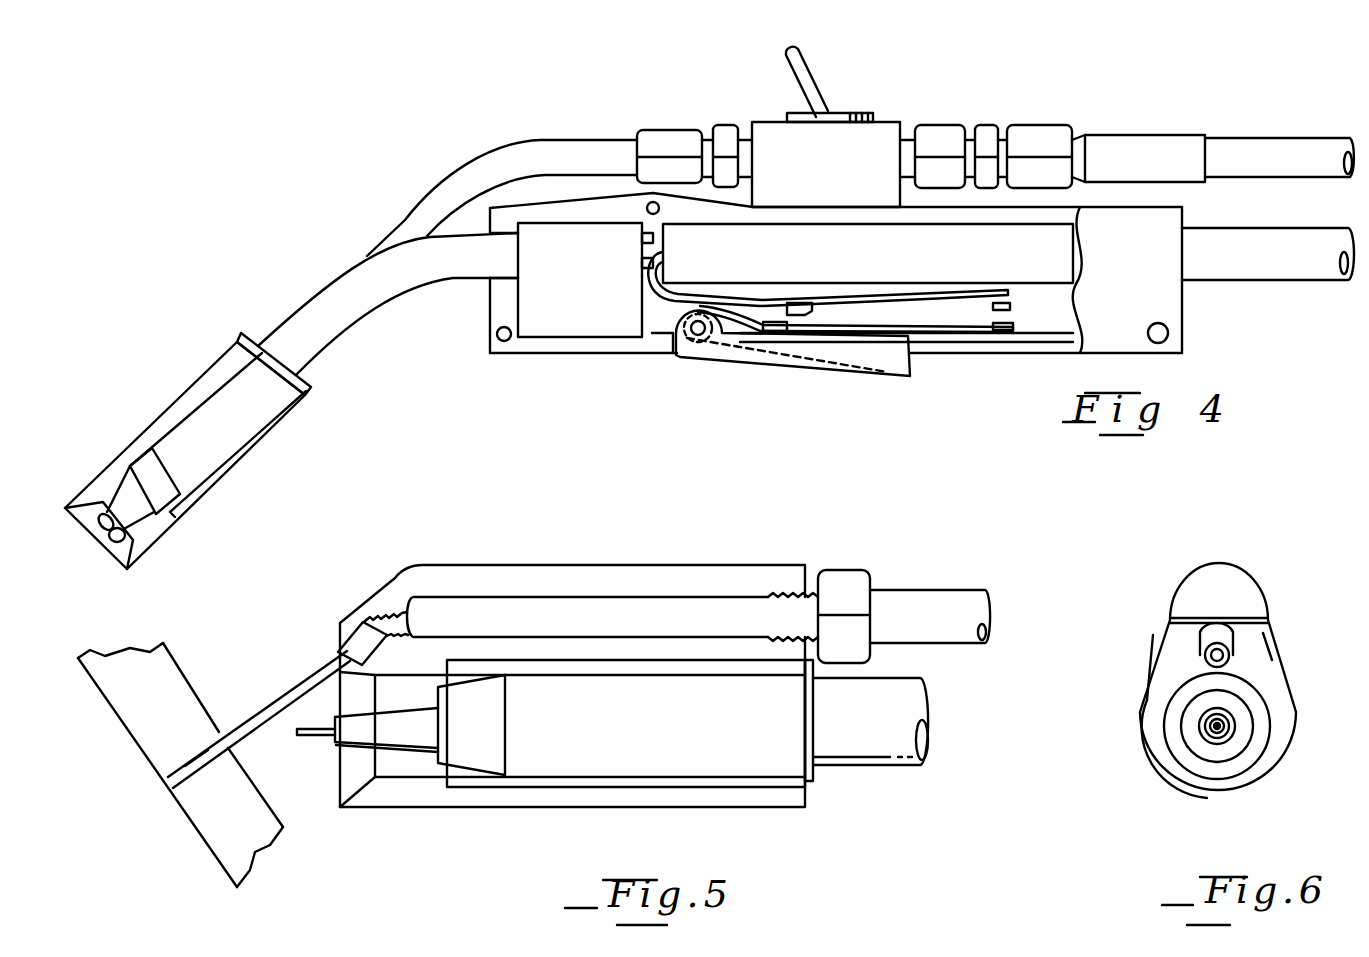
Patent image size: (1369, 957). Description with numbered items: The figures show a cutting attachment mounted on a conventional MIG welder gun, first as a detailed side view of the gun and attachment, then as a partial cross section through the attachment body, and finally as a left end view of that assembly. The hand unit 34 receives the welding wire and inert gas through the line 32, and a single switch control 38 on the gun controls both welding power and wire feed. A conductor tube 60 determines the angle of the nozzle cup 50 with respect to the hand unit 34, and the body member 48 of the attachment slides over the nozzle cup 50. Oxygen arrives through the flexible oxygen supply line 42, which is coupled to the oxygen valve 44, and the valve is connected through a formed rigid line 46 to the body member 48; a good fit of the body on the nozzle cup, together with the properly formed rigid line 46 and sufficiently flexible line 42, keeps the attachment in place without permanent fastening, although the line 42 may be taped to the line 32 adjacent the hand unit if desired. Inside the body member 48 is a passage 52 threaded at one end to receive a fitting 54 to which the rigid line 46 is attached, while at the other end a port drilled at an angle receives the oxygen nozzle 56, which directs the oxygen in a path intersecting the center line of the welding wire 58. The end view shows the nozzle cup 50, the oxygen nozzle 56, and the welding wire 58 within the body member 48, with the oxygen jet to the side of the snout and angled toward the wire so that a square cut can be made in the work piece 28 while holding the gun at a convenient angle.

In FIG. 5, the work piece 28 is at (180, 680).
In FIG. 4, the line 32 is at (1308, 268).
In FIG. 5, the line 32 is at (880, 755).
In FIG. 4, the hand unit 34 is at (1105, 337).
In FIG. 4, the switch control 38 is at (886, 371).
In FIG. 4, the flexible oxygen supply line 42 is at (1288, 152).
In FIG. 4, the oxygen valve 44 is at (877, 137).
In FIG. 4, the formed rigid line 46 is at (537, 158).
In FIG. 5, the formed rigid line 46 is at (928, 597).
In FIG. 4, the body member 48 is at (240, 330).
In FIG. 5, the body member 48 is at (700, 563).
In FIG. 6, the body member 48 is at (1285, 673).
In FIG. 4, the nozzle cup 50 is at (217, 417).
In FIG. 5, the nozzle cup 50 is at (574, 723).
In FIG. 6, the nozzle cup 50 is at (1247, 725).
In FIG. 5, the passage 52 is at (568, 605).
In FIG. 5, the fitting 54 is at (786, 590).
In FIG. 5, the oxygen nozzle 56 is at (353, 647).
In FIG. 6, the oxygen nozzle 56 is at (1230, 640).
In FIG. 5, the welding wire 58 is at (313, 737).
In FIG. 6, the welding wire 58 is at (1216, 728).
In FIG. 4, the conductor tube 60 is at (374, 268).